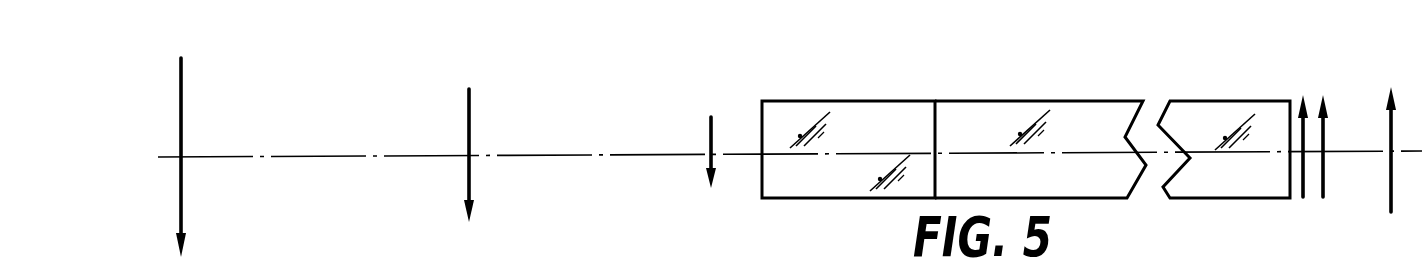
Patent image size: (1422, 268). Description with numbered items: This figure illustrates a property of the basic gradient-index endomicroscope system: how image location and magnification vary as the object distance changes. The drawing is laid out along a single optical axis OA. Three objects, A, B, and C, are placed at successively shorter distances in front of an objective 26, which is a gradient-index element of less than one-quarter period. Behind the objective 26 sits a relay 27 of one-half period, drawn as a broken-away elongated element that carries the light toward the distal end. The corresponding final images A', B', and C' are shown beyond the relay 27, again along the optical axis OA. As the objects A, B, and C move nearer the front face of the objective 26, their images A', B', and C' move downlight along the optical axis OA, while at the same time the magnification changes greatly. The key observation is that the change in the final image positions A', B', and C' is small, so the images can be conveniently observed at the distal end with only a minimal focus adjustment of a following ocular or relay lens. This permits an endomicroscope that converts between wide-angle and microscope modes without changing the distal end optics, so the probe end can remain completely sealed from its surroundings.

The objective 26 is at (862, 100).
The relay 27 is at (1027, 100).
The optical axis OA is at (772, 156).
The object A is at (181, 144).
The object B is at (469, 143).
The object C is at (710, 140).
The image A' is at (1304, 131).
The image B' is at (1326, 131).
The image C' is at (1391, 135).